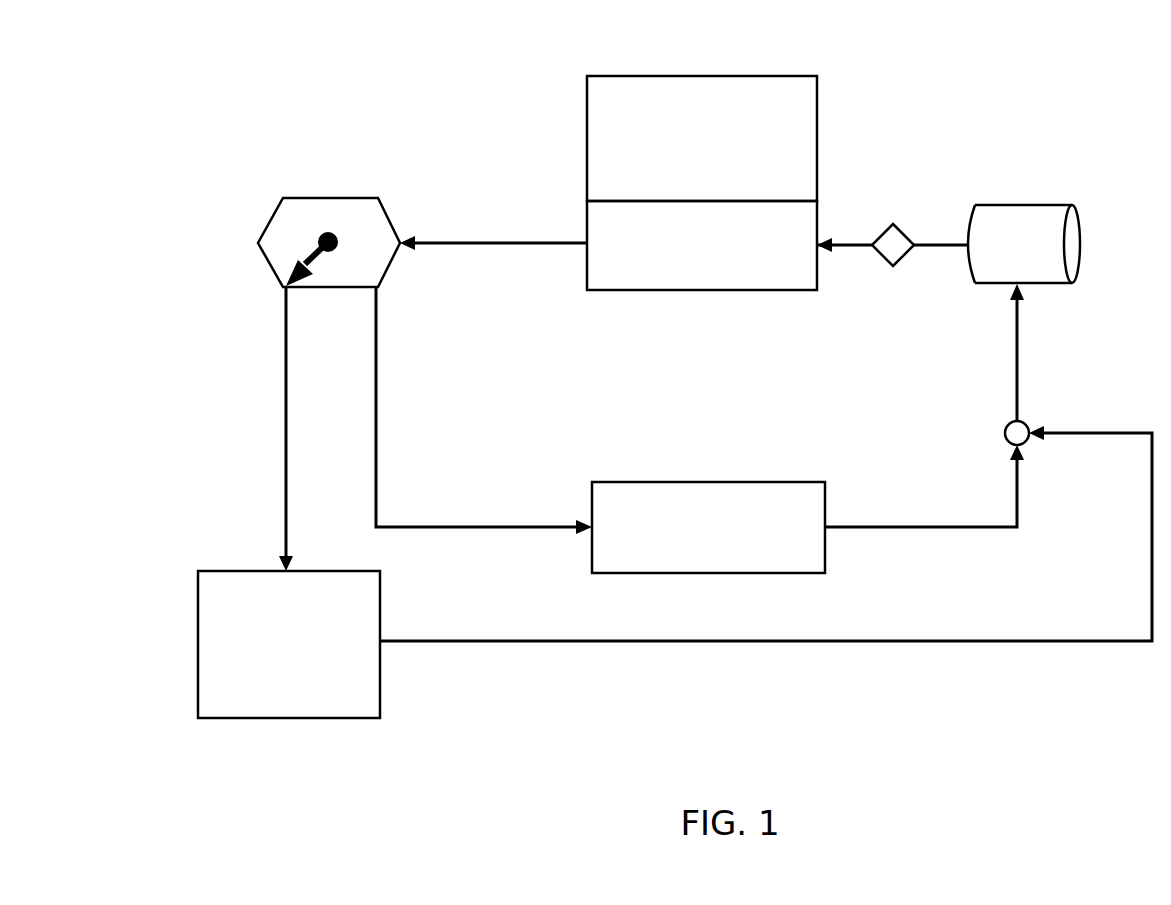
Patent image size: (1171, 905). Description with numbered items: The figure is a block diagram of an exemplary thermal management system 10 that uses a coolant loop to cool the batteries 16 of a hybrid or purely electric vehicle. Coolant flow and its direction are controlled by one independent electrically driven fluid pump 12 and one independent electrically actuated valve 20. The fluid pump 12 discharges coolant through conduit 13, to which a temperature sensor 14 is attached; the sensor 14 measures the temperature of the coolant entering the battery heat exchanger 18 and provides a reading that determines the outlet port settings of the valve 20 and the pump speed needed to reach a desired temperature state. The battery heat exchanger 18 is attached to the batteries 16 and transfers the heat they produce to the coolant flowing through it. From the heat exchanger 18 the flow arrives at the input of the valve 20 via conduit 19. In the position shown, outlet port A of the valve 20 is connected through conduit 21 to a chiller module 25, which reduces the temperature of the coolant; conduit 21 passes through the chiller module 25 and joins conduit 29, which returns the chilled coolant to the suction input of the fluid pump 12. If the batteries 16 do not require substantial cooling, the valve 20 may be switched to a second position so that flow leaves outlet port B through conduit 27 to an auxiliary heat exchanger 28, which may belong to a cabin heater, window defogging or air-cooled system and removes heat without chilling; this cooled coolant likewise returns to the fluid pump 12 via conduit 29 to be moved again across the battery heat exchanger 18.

The thermal management system 10 is at (421, 92).
The fluid pump 12 is at (1010, 205).
The conduit 13 is at (943, 243).
The temperature sensor 14 is at (893, 224).
The batteries 16 is at (735, 75).
The battery heat exchanger 18 is at (724, 292).
The conduit 19 is at (530, 240).
The valve 20 is at (328, 196).
The conduit 21 is at (286, 405).
The chiller module 25 is at (197, 655).
The conduit 27 is at (376, 437).
The auxiliary heat exchanger 28 is at (760, 480).
The conduit 29 is at (1017, 365).